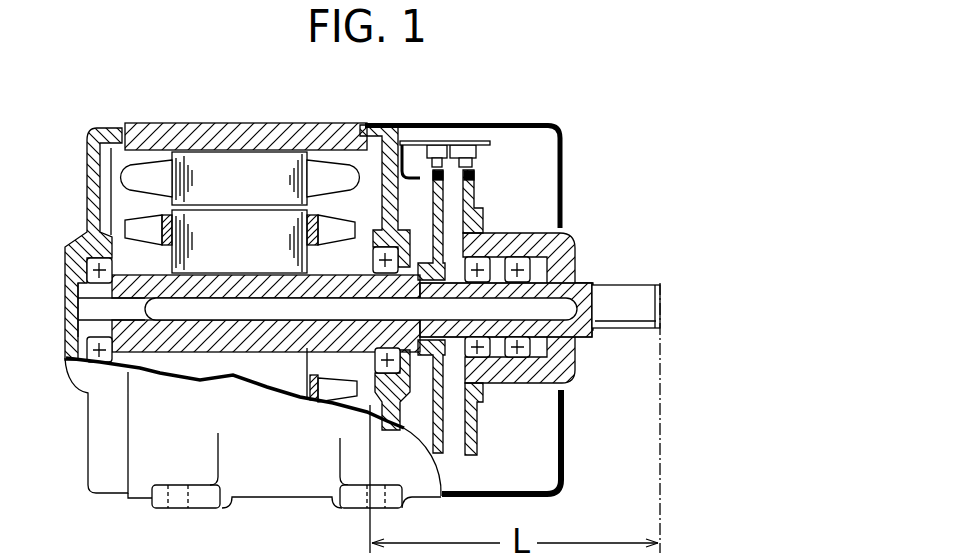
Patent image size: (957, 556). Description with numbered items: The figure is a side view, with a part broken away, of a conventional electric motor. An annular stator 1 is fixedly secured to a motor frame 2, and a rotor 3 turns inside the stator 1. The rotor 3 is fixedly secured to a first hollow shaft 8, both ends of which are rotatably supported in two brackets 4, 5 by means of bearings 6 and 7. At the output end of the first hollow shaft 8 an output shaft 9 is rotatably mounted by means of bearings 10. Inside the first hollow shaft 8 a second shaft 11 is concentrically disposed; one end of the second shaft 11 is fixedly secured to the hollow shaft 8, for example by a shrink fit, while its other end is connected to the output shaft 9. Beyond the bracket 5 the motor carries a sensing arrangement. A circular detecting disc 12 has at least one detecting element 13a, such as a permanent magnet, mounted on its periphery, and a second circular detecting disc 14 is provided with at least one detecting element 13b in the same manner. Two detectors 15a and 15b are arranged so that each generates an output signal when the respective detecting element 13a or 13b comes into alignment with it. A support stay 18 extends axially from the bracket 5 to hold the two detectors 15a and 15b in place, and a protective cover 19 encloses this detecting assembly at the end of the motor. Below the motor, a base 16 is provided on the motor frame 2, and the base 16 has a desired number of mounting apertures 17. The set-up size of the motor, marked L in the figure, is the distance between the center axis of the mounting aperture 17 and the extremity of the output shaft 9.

The annular stator 1 is at (190, 157).
The motor frame 2 is at (220, 133).
The rotor 3 is at (267, 223).
The bracket 4 is at (111, 135).
The bracket 5 is at (388, 135).
The bearing 6 is at (88, 270).
The bearing 7 is at (377, 360).
The first hollow shaft 8 is at (268, 342).
The output shaft 9 is at (560, 256).
The bearings 10 is at (520, 357).
The second shaft 11 is at (207, 312).
The circular detecting disc 12 is at (437, 212).
The detecting element 13a is at (413, 175).
The detecting element 13b is at (476, 177).
The circular detecting disc 14 is at (476, 190).
The detector 15a is at (437, 152).
The detector 15b is at (470, 155).
The base 16 is at (285, 490).
The mounting aperture 17 is at (368, 492).
The support stay 18 is at (478, 143).
The protective cover 19 is at (568, 421).